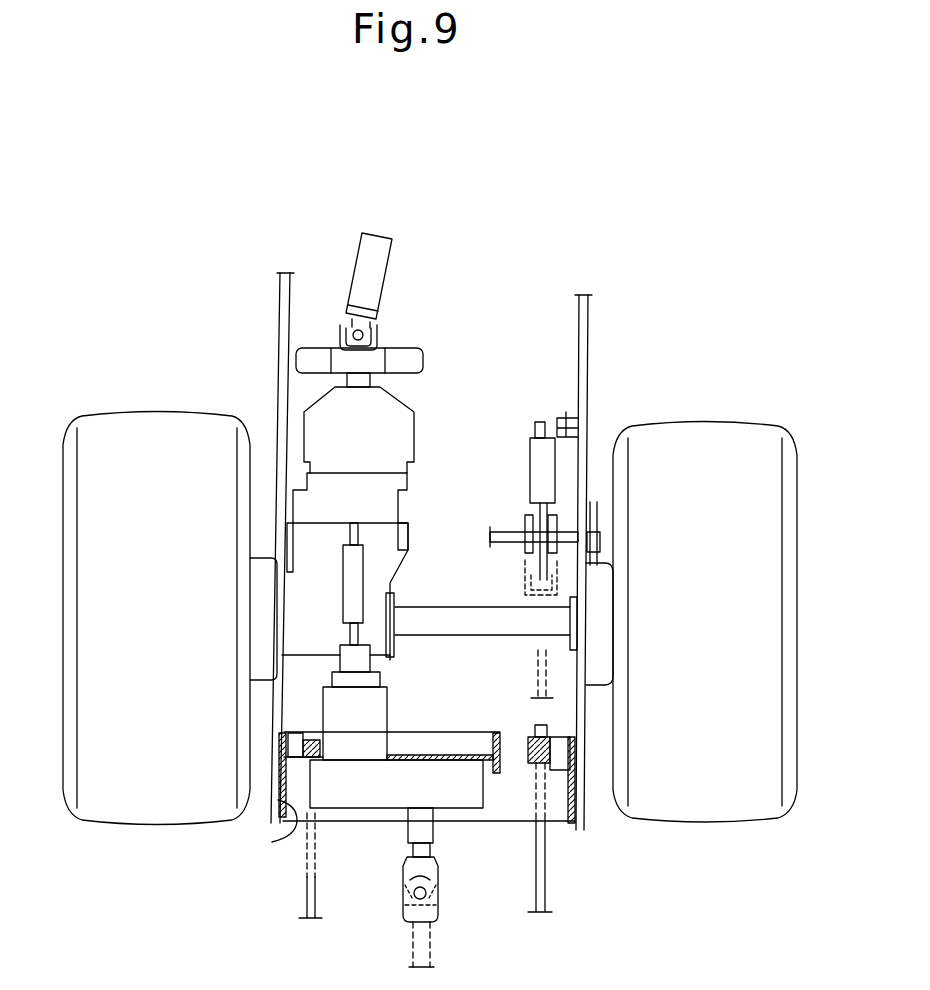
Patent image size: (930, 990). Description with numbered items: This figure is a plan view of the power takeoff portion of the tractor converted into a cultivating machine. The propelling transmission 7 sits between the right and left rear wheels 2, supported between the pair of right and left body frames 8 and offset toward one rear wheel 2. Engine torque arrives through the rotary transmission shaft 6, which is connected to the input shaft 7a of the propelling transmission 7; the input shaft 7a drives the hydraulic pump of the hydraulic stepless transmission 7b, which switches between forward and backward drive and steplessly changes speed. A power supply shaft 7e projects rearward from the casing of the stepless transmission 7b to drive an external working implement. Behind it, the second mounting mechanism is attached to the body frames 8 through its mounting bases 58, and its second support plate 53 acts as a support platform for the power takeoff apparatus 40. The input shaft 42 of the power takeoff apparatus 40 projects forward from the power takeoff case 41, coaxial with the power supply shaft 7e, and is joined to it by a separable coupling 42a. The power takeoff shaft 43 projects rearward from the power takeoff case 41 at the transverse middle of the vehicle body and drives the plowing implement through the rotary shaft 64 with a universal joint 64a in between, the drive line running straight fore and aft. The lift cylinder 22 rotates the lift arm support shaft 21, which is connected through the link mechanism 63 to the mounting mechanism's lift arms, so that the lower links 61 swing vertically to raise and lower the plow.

The rear wheel 2 is at (152, 427).
The rotary transmission shaft 6 is at (375, 270).
The propelling transmission 7 is at (395, 504).
The input shaft 7a is at (362, 381).
The hydraulic stepless transmission 7b is at (392, 447).
The power supply shaft 7e is at (358, 537).
The body frame 8 is at (281, 317).
The lift arm support shaft 21 is at (513, 536).
The lift cylinder 22 is at (556, 477).
The power takeoff apparatus 40 is at (388, 707).
The power takeoff case 41 is at (353, 790).
The input shaft 42 is at (357, 635).
The coupling 42a is at (358, 578).
The power takeoff shaft 43 is at (427, 833).
The second support plate 53 is at (440, 763).
The mounting base 58 is at (293, 828).
The lower link 61 is at (300, 888).
The link mechanism 63 is at (535, 622).
The rotary shaft 64 is at (413, 943).
The universal joint 64a is at (445, 890).